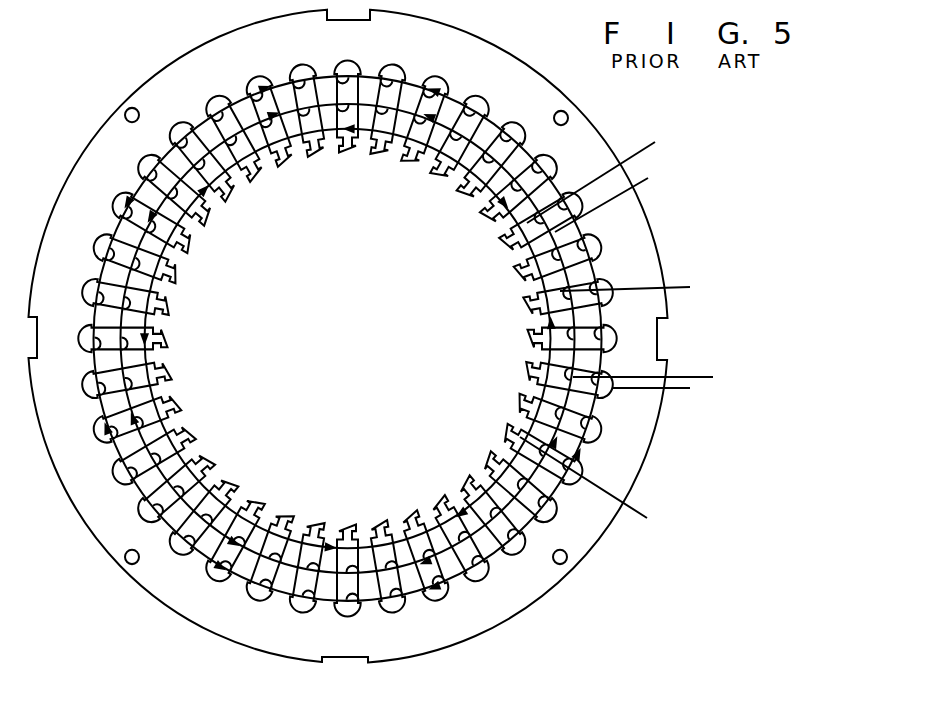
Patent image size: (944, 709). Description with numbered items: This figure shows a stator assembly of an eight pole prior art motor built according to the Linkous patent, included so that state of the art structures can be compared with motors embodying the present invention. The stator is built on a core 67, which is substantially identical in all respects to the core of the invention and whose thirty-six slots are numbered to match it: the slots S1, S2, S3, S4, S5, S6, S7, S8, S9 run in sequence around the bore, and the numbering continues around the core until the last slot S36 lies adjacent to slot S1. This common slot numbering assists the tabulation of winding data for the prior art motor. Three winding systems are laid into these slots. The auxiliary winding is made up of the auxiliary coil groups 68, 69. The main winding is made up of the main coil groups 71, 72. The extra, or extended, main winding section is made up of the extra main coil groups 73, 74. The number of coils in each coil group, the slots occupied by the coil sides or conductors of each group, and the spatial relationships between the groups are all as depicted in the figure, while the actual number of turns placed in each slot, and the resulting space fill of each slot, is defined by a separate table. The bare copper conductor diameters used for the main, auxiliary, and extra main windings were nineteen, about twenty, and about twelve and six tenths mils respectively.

The core 67 is at (112, 150).
The auxiliary coil group 68 is at (236, 178).
The auxiliary coil group 69 is at (367, 136).
The extra main coil group 74 is at (470, 125).
The main coil group 71 is at (612, 264).
The main coil group 72 is at (610, 435).
The extra main coil group 73 is at (576, 247).
The slot S1 is at (492, 215).
The slot S2 is at (510, 245).
The slot S3 is at (525, 272).
The slot S4 is at (530, 300).
The slot S5 is at (530, 333).
The slot S6 is at (530, 365).
The slot S7 is at (530, 392).
The slot S8 is at (527, 420).
The slot S9 is at (522, 446).
The slot S36 is at (468, 190).